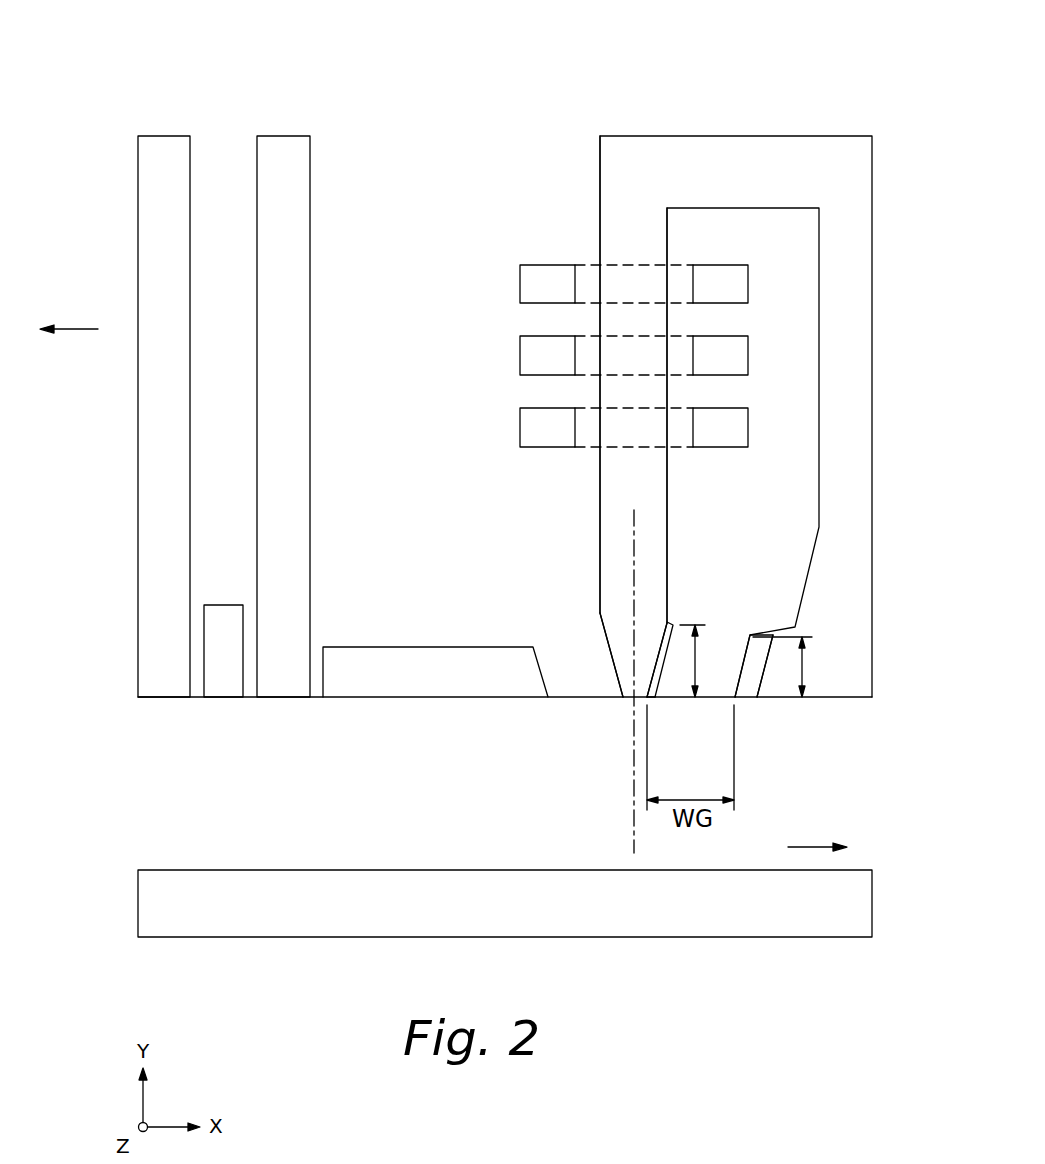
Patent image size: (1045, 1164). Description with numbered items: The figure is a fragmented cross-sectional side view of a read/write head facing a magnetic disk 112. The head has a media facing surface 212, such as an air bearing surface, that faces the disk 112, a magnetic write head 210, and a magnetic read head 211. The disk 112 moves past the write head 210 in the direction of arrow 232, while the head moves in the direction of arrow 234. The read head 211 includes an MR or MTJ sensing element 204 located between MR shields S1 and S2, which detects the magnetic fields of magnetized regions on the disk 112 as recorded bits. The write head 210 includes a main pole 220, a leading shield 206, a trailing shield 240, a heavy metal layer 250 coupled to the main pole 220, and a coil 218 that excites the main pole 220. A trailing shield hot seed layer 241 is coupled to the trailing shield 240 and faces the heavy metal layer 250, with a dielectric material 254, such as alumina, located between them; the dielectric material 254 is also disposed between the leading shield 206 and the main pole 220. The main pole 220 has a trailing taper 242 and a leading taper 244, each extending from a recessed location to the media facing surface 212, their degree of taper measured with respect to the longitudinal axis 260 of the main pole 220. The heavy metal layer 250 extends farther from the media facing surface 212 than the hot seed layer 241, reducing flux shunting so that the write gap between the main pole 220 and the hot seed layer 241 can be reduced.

The magnetic disk 112 is at (860, 903).
The MR sensing element 204 is at (217, 697).
The leading shield 206 is at (380, 697).
The magnetic write head 210 is at (877, 70).
The magnetic read head 211 is at (313, 72).
The media facing surface 212 is at (862, 697).
The coil 218 is at (547, 447).
The main pole 220 is at (657, 495).
The arrow indicating direction of disk motion 232 is at (807, 847).
The arrow indicating direction of read/write head motion 234 is at (80, 330).
The trailing shield 240 is at (862, 618).
The trailing shield hot seed layer 241 is at (747, 697).
The trailing taper 242 is at (667, 617).
The leading taper 244 is at (600, 615).
The heavy metal layer 250 is at (653, 697).
The dielectric material 254 is at (582, 697).
The longitudinal axis 260 is at (633, 832).
The MR shield S1 is at (161, 697).
The MR shield S2 is at (265, 697).